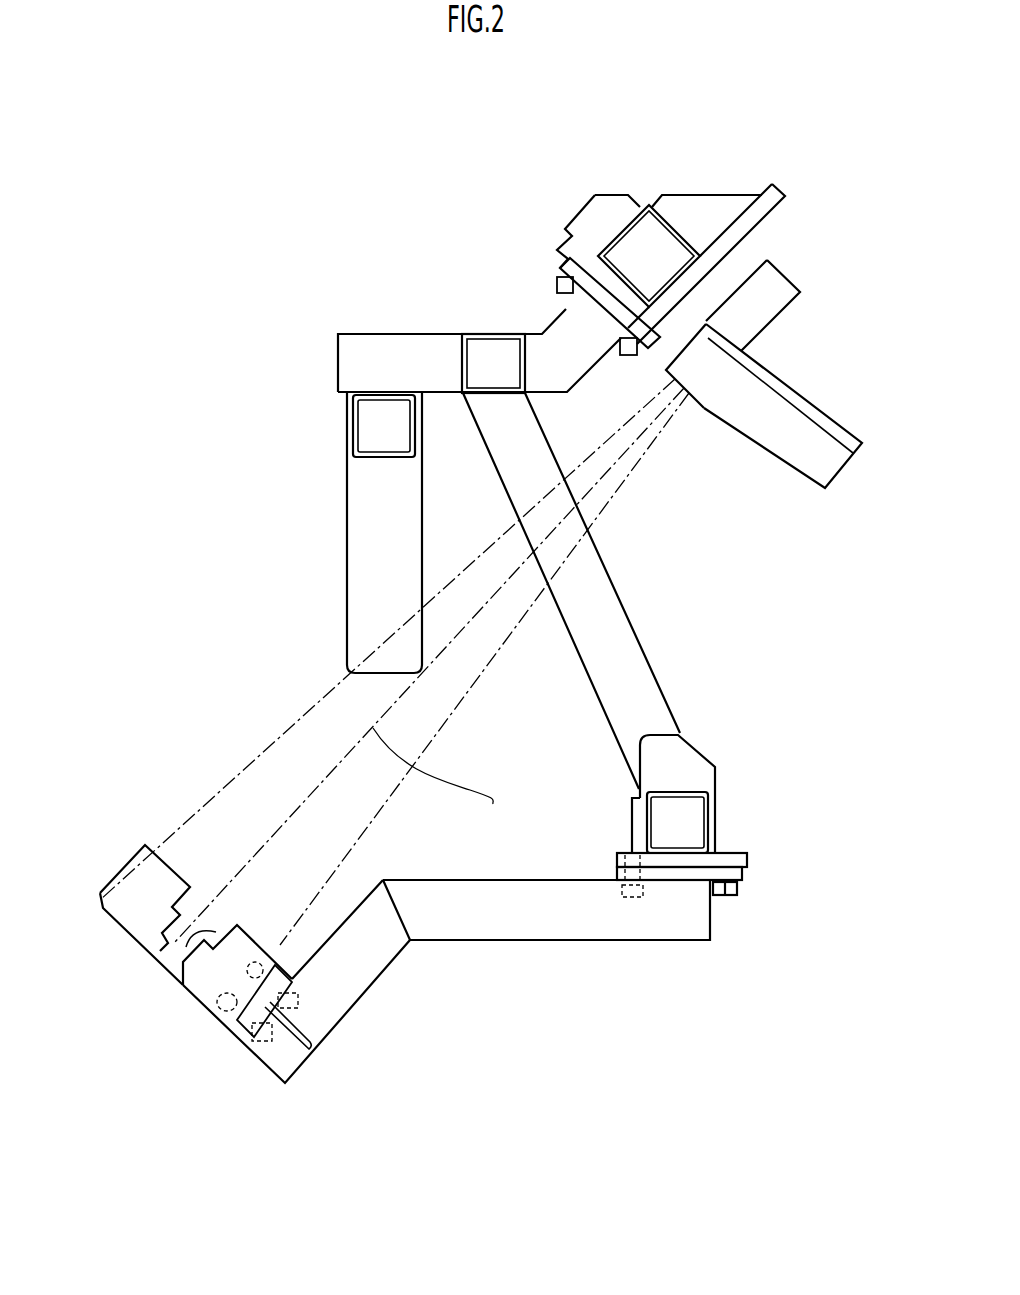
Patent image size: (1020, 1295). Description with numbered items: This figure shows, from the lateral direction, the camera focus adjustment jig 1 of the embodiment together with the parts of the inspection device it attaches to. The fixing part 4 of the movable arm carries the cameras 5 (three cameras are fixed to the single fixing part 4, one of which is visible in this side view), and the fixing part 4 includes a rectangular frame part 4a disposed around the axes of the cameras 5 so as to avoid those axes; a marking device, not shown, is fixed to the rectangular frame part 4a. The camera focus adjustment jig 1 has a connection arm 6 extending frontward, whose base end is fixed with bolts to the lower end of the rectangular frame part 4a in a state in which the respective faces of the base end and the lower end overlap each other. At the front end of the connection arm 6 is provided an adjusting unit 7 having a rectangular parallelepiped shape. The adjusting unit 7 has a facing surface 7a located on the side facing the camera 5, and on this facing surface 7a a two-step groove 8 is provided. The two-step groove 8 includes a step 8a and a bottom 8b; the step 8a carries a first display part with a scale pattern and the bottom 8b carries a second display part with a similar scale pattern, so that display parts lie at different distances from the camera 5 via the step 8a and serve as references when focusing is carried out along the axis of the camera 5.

The camera focus adjustment jig 1 is at (440, 1057).
The fixing part 4 is at (668, 245).
The rectangular frame part 4a is at (633, 658).
The camera 5 is at (775, 290).
The connection arm 6 is at (573, 920).
The adjusting unit 7 is at (145, 897).
The facing surface 7a is at (170, 868).
The two-step groove 8 is at (200, 948).
The step 8a is at (170, 950).
The bottom 8b is at (190, 962).